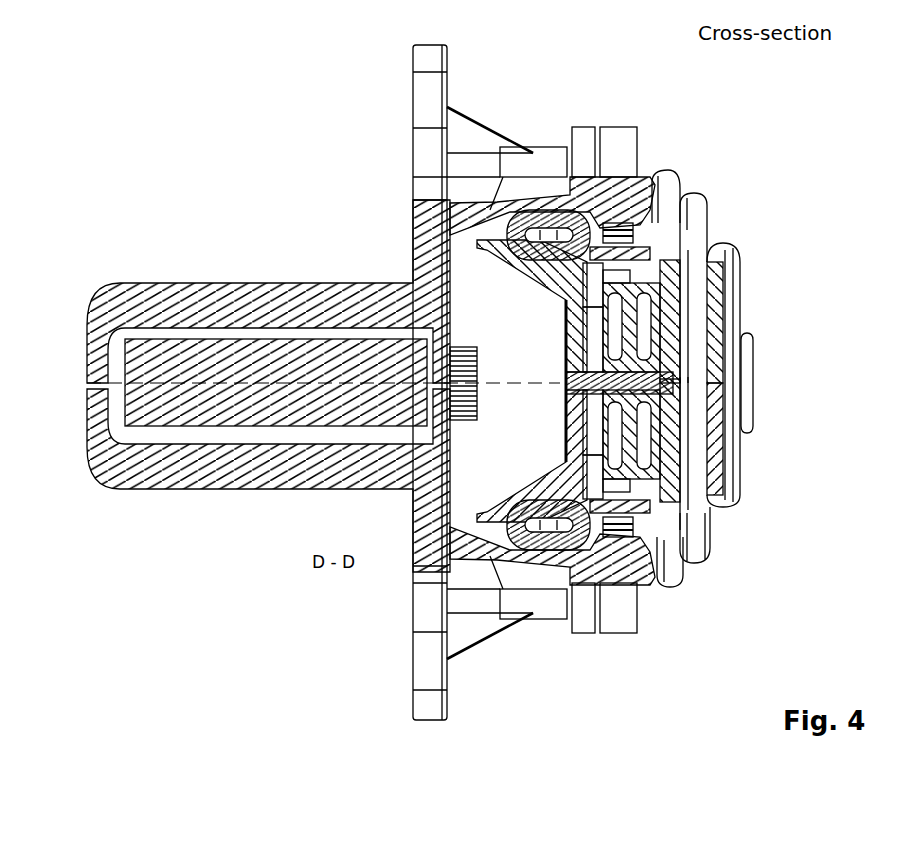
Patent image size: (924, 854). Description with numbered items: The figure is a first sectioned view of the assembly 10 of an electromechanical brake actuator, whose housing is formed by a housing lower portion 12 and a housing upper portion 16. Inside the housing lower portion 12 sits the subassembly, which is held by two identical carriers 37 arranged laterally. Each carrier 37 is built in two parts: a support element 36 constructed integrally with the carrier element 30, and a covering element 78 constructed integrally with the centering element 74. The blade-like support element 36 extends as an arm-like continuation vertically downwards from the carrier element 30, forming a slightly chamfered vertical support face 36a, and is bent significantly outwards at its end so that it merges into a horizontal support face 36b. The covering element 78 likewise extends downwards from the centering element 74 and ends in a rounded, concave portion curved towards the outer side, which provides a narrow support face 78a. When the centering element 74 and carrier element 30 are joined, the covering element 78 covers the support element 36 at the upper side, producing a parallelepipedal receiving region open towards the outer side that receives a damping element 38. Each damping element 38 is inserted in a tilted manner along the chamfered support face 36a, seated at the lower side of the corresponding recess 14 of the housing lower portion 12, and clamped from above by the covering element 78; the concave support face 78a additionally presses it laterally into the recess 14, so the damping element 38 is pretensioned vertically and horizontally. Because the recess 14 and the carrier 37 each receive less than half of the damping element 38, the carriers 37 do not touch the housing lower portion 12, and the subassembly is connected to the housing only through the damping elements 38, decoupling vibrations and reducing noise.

The assembly 10 is at (426, 766).
The housing lower portion 12 is at (522, 573).
The recess 14 is at (547, 207).
The housing upper portion 16 is at (667, 562).
The carrier element 30 is at (580, 460).
The support element 36 is at (500, 251).
The support face 36a is at (540, 473).
The support face 36b is at (425, 500).
The carrier 37 is at (578, 260).
The damping element 38 is at (478, 213).
The centering element 74 is at (700, 333).
The covering element 78 is at (703, 242).
The support face 78a is at (560, 462).